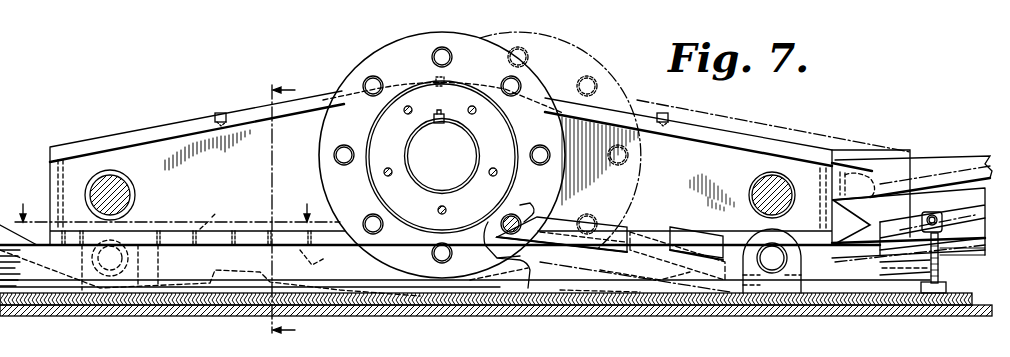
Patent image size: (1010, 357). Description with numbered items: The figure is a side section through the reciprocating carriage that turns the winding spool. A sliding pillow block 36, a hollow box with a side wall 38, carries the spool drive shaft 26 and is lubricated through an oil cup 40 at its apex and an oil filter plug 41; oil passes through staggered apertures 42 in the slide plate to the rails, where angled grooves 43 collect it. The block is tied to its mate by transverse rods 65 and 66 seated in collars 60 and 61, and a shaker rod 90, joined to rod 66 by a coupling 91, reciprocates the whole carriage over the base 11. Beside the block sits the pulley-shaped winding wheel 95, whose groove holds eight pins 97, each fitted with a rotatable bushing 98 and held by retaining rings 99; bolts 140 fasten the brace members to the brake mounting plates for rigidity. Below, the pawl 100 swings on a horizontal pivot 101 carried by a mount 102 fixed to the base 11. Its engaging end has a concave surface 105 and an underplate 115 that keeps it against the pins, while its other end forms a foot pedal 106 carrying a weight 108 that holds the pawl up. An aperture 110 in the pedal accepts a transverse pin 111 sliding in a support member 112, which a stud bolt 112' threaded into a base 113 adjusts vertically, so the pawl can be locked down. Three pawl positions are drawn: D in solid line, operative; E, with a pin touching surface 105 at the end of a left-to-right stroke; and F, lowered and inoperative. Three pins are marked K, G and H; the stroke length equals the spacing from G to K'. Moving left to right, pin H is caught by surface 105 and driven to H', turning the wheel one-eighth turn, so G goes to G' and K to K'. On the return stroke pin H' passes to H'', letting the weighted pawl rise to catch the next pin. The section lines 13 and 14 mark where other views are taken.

The base 11 is at (686, 306).
The section line 13- 13 is at (176, 208).
The section line 14- 14 is at (279, 210).
The spool drive shaft 26 is at (442, 157).
The sliding pillow block 36 is at (175, 150).
The side wall 38 is at (439, 108).
The oil cup 40 is at (446, 77).
The oil filter plug 41 is at (221, 113).
The aperture 42 is at (214, 228).
The groove 43 is at (308, 259).
The collar 60 is at (128, 181).
The collar 61 is at (786, 181).
The transverse rod 65 is at (128, 197).
The transverse rod 66 is at (752, 184).
The shaker rod 90 is at (946, 165).
The coupling member 91 is at (856, 160).
The winding wheel 95 is at (321, 171).
The pin 97 is at (371, 96).
The bushing 98 is at (522, 205).
The retaining ring 99 is at (431, 62).
The pawl 100 is at (708, 232).
The pivot 101 is at (790, 259).
The mount 102 is at (800, 295).
The concave surface 105 is at (556, 220).
The foot pedal 106 is at (955, 264).
The weight 108 is at (972, 257).
The aperture 110 is at (946, 249).
The transverse pin 111 is at (947, 209).
The support member 112 is at (933, 235).
The stud bolt 112' is at (916, 258).
The base 113 is at (936, 295).
The underplate 115 is at (496, 259).
The bolt 140 is at (390, 176).
The cam C is at (932, 222).
The operative position D is at (628, 232).
The pin-contact position E is at (625, 282).
The inoperative position F is at (570, 306).
The pin position G is at (556, 155).
The pin position G' is at (604, 217).
The pin position H is at (496, 216).
The pin position H' is at (488, 321).
The pin position H'' is at (407, 243).
The pin position K is at (506, 74).
The pin position K' is at (574, 141).